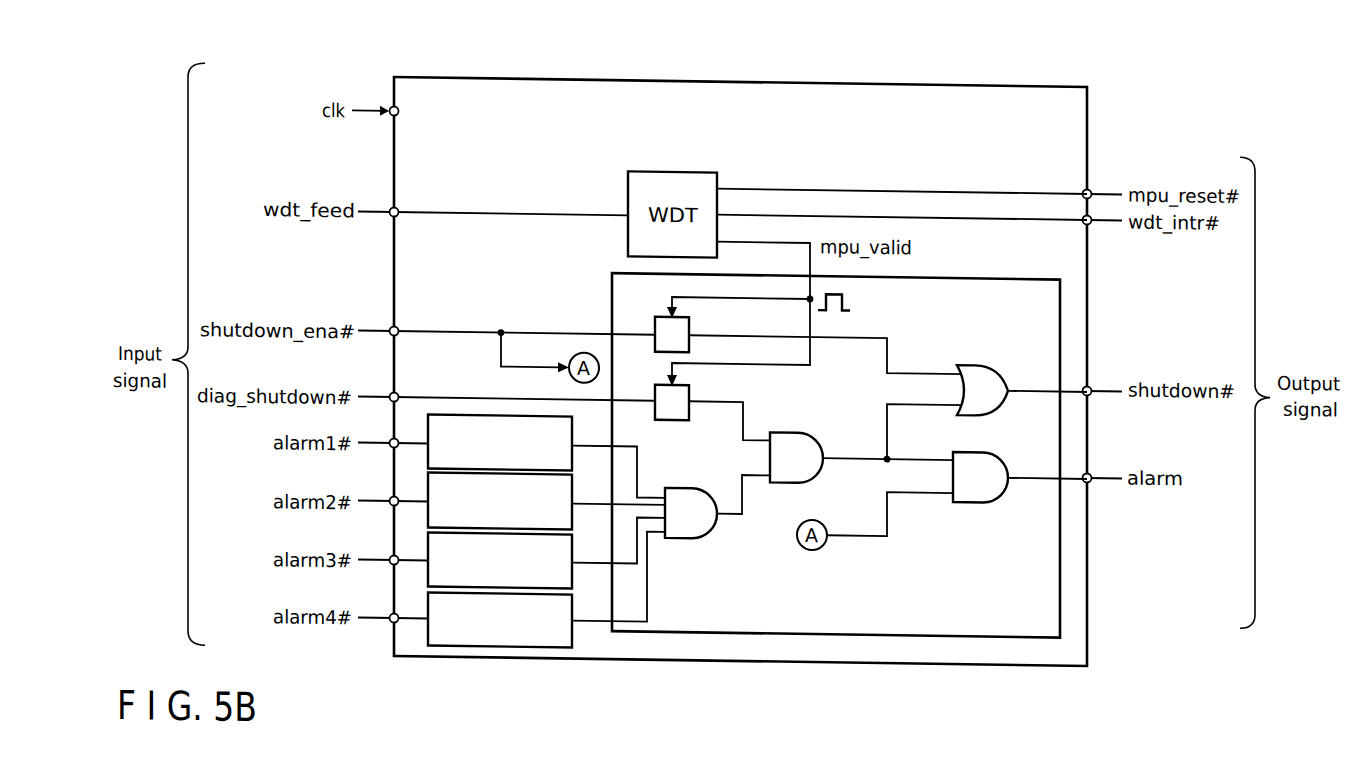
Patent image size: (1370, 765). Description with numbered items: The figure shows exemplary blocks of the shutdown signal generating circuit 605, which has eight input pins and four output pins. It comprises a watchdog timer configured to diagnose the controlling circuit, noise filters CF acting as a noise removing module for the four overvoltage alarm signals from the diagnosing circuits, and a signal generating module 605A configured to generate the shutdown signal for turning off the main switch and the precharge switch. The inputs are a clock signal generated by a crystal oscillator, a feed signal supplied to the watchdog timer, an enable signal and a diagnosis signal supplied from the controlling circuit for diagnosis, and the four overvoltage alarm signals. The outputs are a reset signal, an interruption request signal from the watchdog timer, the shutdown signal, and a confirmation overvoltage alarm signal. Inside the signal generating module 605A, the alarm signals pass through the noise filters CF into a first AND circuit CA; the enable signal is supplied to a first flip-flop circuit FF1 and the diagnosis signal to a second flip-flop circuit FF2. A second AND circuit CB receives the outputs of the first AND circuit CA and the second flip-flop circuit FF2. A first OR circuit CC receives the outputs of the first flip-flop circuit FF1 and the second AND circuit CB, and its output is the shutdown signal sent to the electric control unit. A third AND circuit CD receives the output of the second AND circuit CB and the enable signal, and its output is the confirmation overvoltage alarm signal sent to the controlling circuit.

The shutdown signal generating circuit 605 is at (817, 78).
The signal generating module 605A is at (800, 631).
The first flip-flop circuit FF1 is at (658, 308).
The second flip-flop circuit FF2 is at (658, 376).
The noise filter CF is at (595, 433).
The first AND circuit CA is at (683, 484).
The second AND circuit CB is at (790, 424).
The first OR circuit CC is at (998, 359).
The third AND circuit CD is at (998, 444).